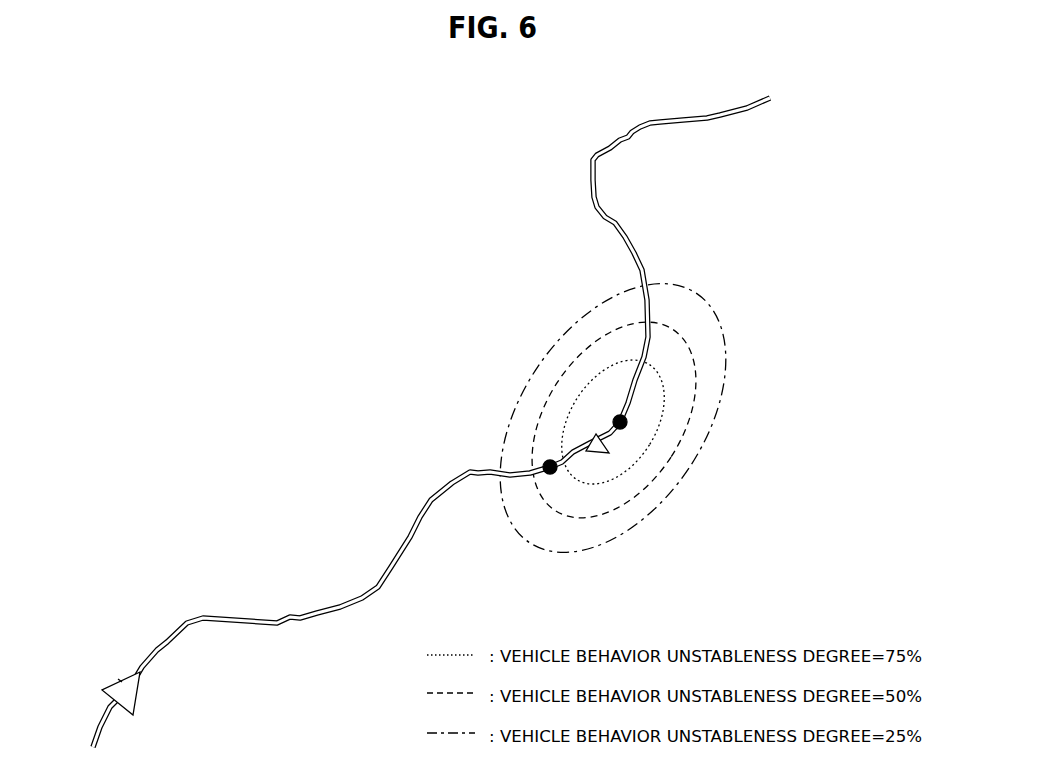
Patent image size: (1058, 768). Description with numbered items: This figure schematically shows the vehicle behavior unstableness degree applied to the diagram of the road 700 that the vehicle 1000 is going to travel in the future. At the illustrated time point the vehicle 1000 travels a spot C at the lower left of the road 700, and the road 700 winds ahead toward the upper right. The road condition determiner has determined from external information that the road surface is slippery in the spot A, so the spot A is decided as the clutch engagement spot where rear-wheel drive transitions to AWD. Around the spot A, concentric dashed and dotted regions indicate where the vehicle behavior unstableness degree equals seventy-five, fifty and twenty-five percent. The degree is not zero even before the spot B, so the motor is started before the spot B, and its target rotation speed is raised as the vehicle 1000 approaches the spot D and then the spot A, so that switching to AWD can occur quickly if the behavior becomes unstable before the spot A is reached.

The road 700 is at (427, 508).
The vehicle 1000 is at (138, 697).
The spot A is at (632, 418).
The spot B is at (601, 455).
The spot C is at (120, 680).
The spot D is at (543, 463).